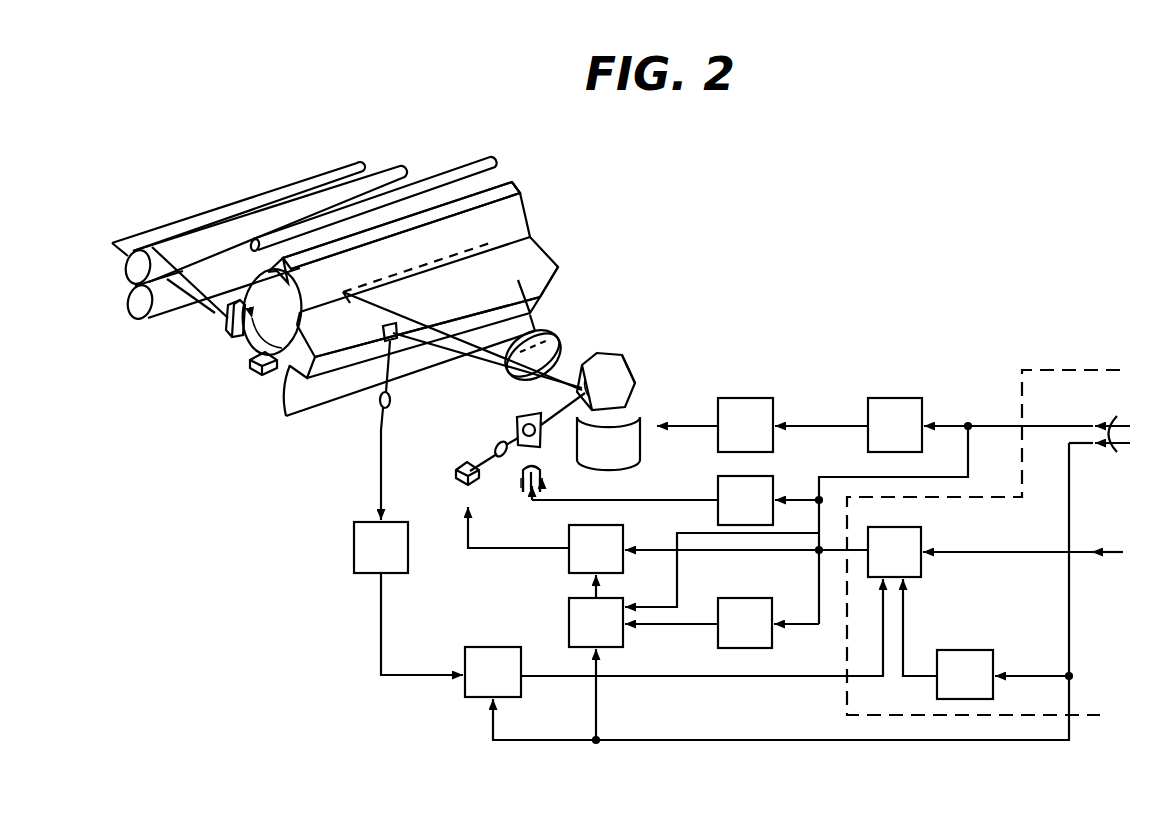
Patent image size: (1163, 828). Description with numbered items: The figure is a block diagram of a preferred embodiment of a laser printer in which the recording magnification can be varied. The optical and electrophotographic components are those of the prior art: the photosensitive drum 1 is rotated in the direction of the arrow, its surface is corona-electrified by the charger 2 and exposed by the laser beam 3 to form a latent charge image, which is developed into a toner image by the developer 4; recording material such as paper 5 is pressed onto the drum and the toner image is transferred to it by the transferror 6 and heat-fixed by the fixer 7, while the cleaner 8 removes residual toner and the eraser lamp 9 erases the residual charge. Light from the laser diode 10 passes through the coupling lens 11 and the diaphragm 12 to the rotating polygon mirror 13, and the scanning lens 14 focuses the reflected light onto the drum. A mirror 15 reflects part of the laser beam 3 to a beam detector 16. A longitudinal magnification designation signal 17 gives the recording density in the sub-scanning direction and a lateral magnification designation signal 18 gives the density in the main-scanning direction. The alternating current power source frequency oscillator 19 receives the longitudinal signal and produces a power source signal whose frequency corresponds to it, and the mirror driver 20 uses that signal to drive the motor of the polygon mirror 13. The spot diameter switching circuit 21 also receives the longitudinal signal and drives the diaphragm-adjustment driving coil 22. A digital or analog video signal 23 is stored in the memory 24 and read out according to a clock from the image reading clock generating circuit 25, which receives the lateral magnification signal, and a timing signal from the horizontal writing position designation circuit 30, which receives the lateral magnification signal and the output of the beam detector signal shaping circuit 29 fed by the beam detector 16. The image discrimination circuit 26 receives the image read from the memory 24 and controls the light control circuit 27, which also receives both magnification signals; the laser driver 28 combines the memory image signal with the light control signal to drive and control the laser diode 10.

The photosensitive drum 1 is at (537, 208).
The charger 2 is at (522, 183).
The laser beam 3 is at (505, 247).
The developer 4 is at (556, 293).
The recording paper 5 is at (293, 420).
The transferror 6 is at (249, 364).
The fixer 7 is at (234, 224).
The cleaner 8 is at (226, 322).
The eraser lamp 9 is at (456, 165).
The laser diode 10 is at (457, 466).
The coupling lens 11 is at (492, 445).
The diaphragm 12 is at (516, 413).
The polygon mirror 13 is at (632, 382).
The scanning lens 14 is at (548, 336).
The mirror 15 is at (381, 338).
The beam detector 16 is at (396, 396).
The longitudinal magnification designation signal 17 is at (1075, 424).
The lateral magnification designation signal 18 is at (1083, 448).
The alternating current power source frequency oscillator 19 is at (895, 397).
The mirror driver 20 is at (745, 397).
The spot diameter switching circuit 21 is at (765, 476).
The diaphragm-adjustment driving coil 22 is at (546, 475).
The video signal 23 is at (1105, 556).
The memory 24 is at (921, 533).
The image reading clock generating circuit 25 is at (966, 649).
The image discrimination circuit 26 is at (745, 597).
The light control circuit 27 is at (624, 642).
The laser driver 28 is at (568, 538).
The beam detector signal shaping circuit 29 is at (409, 541).
The horizontal writing position designation circuit 30 is at (495, 646).